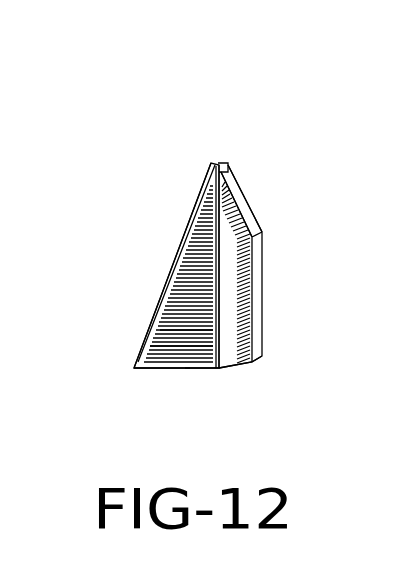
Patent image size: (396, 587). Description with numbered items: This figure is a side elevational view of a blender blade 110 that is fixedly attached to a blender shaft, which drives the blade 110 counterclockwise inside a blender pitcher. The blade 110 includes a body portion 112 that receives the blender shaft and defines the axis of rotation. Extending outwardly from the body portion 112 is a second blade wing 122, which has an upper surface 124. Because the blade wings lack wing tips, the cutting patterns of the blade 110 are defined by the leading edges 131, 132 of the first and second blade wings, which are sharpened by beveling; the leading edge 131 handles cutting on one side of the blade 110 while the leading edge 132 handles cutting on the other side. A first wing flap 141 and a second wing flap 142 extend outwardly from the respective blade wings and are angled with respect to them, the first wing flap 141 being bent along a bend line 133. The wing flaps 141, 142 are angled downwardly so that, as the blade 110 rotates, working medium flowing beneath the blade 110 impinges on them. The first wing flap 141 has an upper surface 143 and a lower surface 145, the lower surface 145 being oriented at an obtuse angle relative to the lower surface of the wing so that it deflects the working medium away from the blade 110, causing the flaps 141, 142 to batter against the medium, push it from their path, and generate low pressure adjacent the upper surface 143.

The blender blade 110 is at (311, 149).
The leading edge 131 is at (225, 162).
The bend line 133 is at (215, 210).
The body portion 112 is at (207, 259).
The second wing flap 142 is at (154, 298).
The second blade wing 122 is at (177, 338).
The upper surface 124 is at (170, 365).
The leading edge 132 is at (201, 368).
The first wing flap 141 is at (248, 291).
The lower surface 145 is at (262, 249).
The upper surface 143 is at (232, 347).